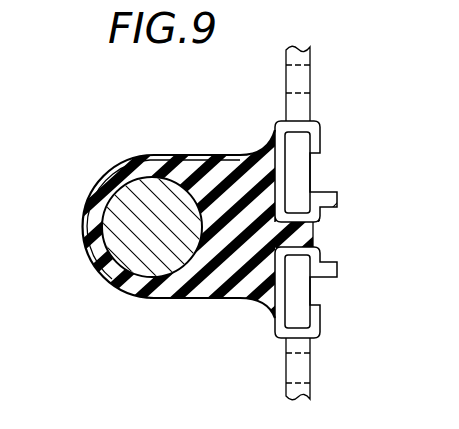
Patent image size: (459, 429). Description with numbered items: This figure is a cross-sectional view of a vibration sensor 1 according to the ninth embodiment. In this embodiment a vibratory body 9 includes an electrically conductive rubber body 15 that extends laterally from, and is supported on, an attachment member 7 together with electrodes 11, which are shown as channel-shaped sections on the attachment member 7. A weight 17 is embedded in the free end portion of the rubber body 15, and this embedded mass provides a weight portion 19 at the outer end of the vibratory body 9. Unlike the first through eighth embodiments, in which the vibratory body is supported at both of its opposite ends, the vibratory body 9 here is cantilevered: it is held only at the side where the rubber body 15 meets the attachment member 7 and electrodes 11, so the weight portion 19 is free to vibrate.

The mounting assembly 1 is at (80, 133).
The attachment member 7 is at (312, 107).
The vibratory body 9 is at (173, 158).
The electrodes 11 is at (322, 138).
The electrically conductive rubber body 15 is at (233, 183).
The weight 17 is at (127, 252).
The weight portion 19 is at (158, 297).